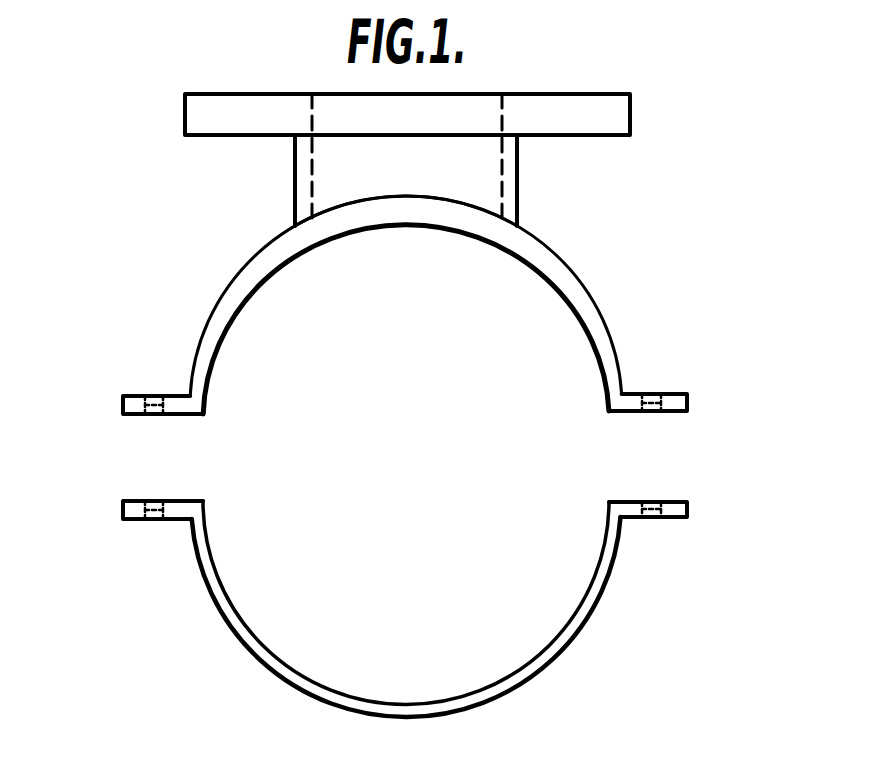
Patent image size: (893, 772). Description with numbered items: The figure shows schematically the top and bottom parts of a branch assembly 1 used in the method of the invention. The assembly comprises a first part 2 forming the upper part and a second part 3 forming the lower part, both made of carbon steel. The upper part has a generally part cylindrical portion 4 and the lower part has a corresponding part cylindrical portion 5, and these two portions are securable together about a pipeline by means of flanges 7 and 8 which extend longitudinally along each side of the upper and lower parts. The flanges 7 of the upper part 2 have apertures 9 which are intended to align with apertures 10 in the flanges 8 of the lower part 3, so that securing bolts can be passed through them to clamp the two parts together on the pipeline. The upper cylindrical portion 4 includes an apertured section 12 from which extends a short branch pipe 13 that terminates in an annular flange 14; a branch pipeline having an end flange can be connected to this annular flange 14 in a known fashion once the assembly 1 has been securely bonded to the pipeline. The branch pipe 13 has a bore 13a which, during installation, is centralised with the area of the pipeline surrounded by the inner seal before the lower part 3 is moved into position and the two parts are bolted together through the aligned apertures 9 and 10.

The branch assembly 1 is at (410, 466).
The first part 2 is at (420, 305).
The second part 3 is at (406, 618).
The part cylindrical portion 4 is at (207, 337).
The part cylindrical portion 5 is at (214, 563).
The flanges 7 is at (420, 403).
The flanges 8 is at (410, 518).
The apertures 9 is at (150, 414).
The apertures 10 is at (152, 502).
The apertured section 12 is at (358, 235).
The branch pipe 13 is at (517, 191).
The bore 13a is at (378, 158).
The annular flange 14 is at (553, 106).